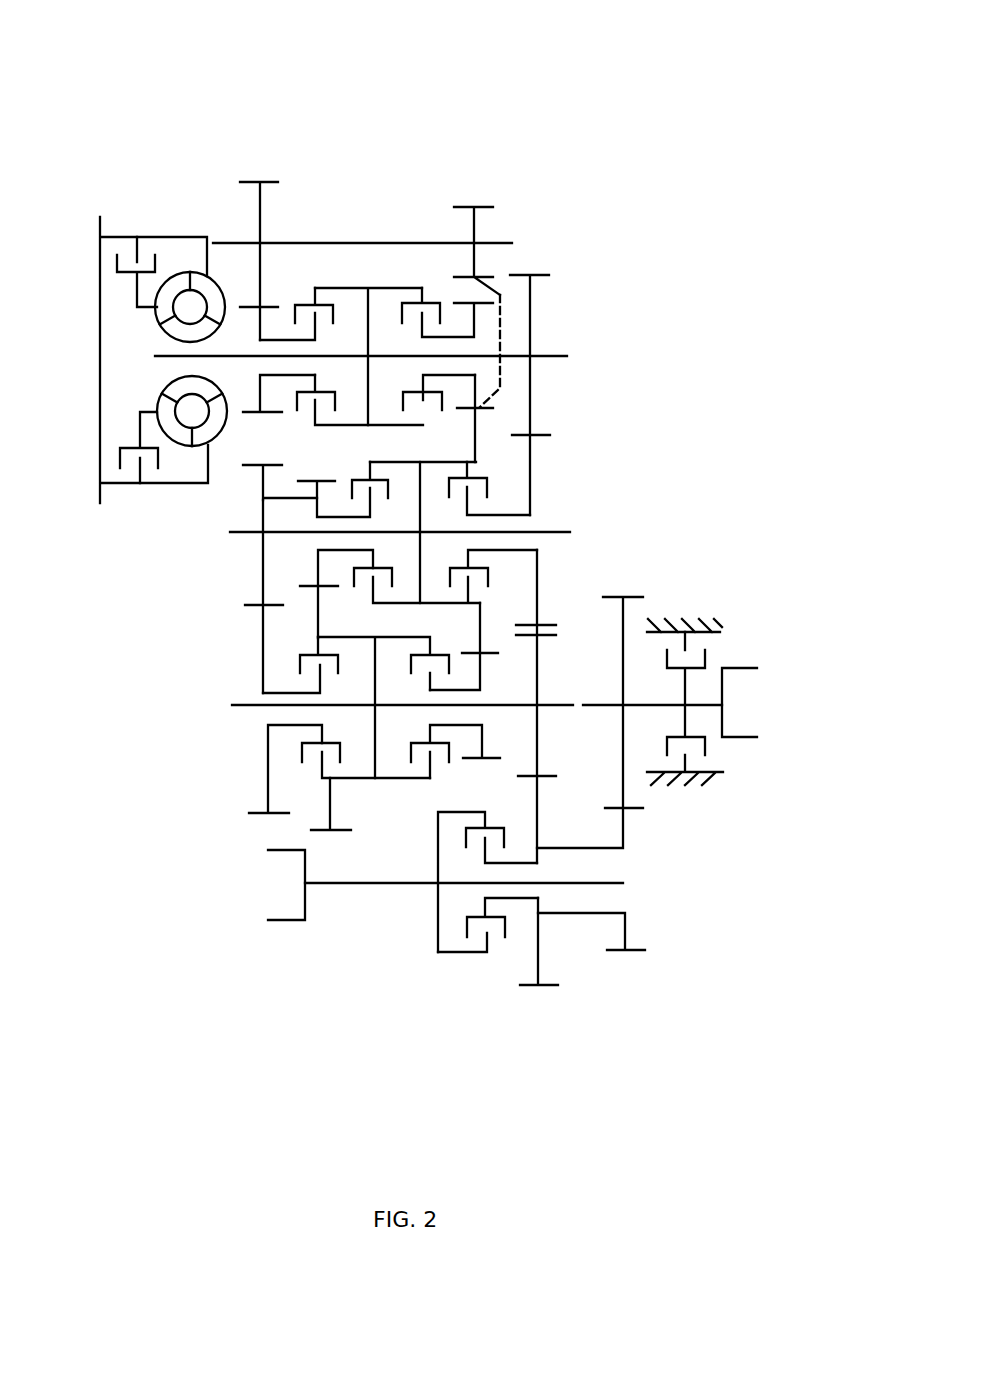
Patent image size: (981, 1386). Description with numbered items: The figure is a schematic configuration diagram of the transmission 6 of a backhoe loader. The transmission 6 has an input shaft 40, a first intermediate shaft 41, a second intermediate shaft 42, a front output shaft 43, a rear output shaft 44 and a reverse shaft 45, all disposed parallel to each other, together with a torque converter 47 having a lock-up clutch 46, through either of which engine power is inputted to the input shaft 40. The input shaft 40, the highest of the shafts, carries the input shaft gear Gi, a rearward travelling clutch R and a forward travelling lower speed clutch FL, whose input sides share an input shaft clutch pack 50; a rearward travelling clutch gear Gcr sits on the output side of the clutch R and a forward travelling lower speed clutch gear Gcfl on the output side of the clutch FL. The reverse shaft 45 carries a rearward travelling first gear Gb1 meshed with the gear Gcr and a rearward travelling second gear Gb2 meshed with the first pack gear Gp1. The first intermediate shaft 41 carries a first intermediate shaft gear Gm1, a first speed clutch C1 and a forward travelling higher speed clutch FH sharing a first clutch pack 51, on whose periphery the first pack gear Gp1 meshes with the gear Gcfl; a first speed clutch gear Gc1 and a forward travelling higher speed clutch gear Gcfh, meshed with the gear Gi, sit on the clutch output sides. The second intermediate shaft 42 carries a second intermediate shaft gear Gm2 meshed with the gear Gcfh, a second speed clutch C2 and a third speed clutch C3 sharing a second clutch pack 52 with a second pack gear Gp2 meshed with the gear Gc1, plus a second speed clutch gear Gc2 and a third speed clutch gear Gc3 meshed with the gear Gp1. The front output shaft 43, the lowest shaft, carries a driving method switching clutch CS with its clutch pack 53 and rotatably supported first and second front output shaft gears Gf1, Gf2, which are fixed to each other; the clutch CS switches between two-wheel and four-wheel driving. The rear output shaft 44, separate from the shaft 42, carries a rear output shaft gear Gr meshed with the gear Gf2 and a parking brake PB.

The transmission 6 is at (451, 94).
The lock-up clutch 46 is at (143, 252).
The torque converter 47 is at (163, 305).
The input shaft 40 is at (553, 353).
The reverse shaft 45 is at (340, 240).
The rearward travelling first gear Gb1 is at (253, 182).
The rearward travelling clutch R is at (322, 273).
The input shaft clutch pack 50 is at (343, 288).
The forward travelling lower speed clutch FL is at (426, 273).
The forward travelling lower speed clutch gear Gcfl is at (475, 323).
The rearward travelling second gear Gb2 is at (467, 205).
The input shaft gear Gi is at (532, 272).
The rearward travelling clutch gear Gcr is at (253, 413).
The first pack gear Gp1 is at (482, 422).
The first speed clutch C1 is at (362, 466).
The first clutch pack 51 is at (413, 461).
The forward travelling higher speed clutch FH is at (504, 475).
The forward travelling higher speed clutch gear Gcfh is at (532, 478).
The first intermediate shaft 41 is at (550, 531).
The first speed clutch gear Gc1 is at (263, 500).
The first intermediate shaft gear Gm1 is at (263, 570).
The second pack gear Gp2 is at (318, 617).
The third speed clutch gear Gc3 is at (484, 670).
The second speed clutch C2 is at (282, 672).
The second intermediate shaft gear Gm2 is at (537, 677).
The second intermediate shaft 42 is at (240, 712).
The rear output shaft gear Gr is at (632, 594).
The parking brake PB is at (721, 651).
The rear output shaft 44 is at (708, 703).
The second speed clutch gear Gc2 is at (268, 792).
The third speed clutch C3 is at (430, 773).
The second clutch pack 52 is at (368, 780).
The clutch pack 53 is at (460, 812).
The front output shaft 43 is at (350, 887).
The driving method switching clutch CS is at (449, 972).
The first front output shaft gear Gf1 is at (537, 973).
The second front output shaft gear Gf2 is at (638, 955).